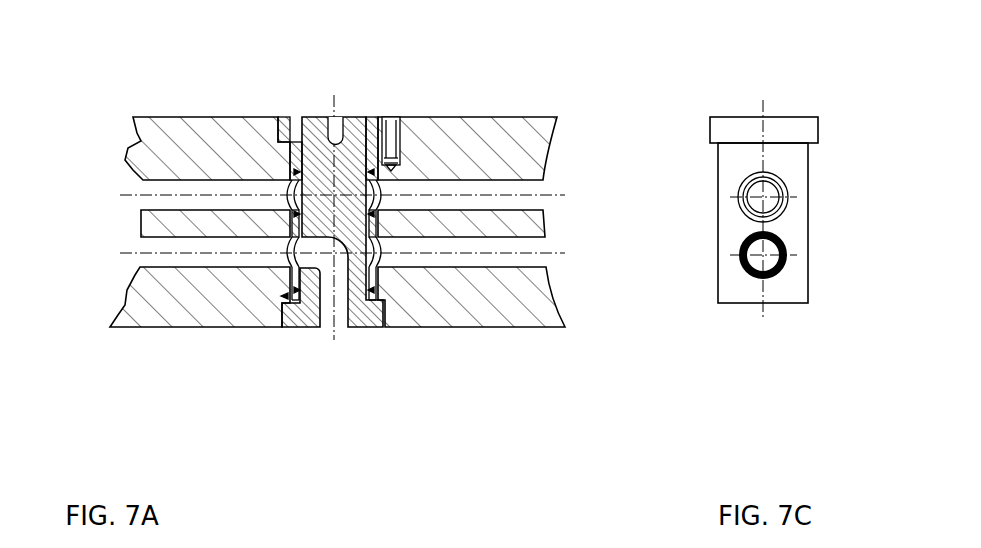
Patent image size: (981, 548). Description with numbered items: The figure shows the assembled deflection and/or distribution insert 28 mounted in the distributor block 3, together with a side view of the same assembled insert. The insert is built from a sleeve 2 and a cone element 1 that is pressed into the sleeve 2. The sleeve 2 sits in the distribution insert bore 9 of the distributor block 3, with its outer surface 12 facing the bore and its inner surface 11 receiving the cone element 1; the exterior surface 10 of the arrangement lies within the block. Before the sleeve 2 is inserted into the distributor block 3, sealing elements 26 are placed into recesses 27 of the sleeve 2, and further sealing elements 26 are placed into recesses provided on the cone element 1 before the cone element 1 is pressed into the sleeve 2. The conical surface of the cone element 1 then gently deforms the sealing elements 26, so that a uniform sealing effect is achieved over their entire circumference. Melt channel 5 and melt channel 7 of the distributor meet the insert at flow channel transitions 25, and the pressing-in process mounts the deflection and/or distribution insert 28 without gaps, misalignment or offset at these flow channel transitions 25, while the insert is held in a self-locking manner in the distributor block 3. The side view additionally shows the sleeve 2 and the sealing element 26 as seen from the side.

In FIG. 7A, the cone element 1 is at (380, 215).
In FIG. 7A, the sleeve 2 is at (292, 183).
In FIG. 7C, the sleeve 2 is at (733, 162).
In FIG. 7A, the distributor block 3 is at (507, 300).
In FIG. 7A, the melt channel 5 is at (140, 245).
In FIG. 7A, the melt channel 7 is at (518, 245).
In FIG. 7A, the distribution insert bore 9 is at (371, 285).
In FIG. 7A, the exterior surface 10 is at (382, 275).
In FIG. 7A, the inner surface 11 is at (312, 290).
In FIG. 7A, the outer surface 12 is at (283, 296).
In FIG. 7A, the flow channel transition 25 is at (291, 270).
In FIG. 7A, the sealing element 26 is at (297, 212).
In FIG. 7C, the sealing element 26 is at (747, 277).
In FIG. 7A, the recess 27 is at (296, 172).
In FIG. 7A, the deflection and/or distribution insert 28 is at (278, 82).